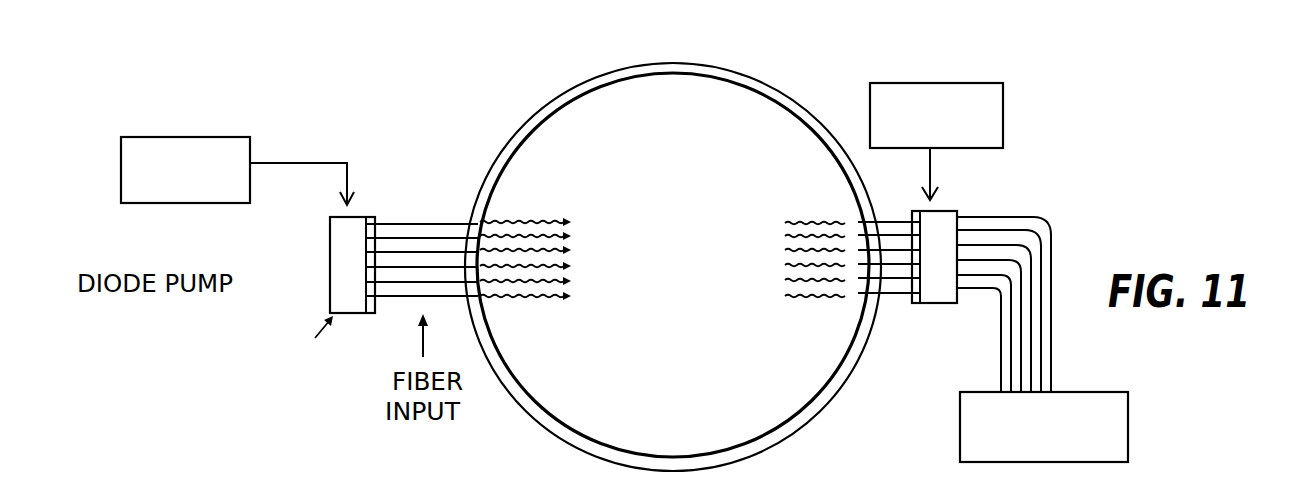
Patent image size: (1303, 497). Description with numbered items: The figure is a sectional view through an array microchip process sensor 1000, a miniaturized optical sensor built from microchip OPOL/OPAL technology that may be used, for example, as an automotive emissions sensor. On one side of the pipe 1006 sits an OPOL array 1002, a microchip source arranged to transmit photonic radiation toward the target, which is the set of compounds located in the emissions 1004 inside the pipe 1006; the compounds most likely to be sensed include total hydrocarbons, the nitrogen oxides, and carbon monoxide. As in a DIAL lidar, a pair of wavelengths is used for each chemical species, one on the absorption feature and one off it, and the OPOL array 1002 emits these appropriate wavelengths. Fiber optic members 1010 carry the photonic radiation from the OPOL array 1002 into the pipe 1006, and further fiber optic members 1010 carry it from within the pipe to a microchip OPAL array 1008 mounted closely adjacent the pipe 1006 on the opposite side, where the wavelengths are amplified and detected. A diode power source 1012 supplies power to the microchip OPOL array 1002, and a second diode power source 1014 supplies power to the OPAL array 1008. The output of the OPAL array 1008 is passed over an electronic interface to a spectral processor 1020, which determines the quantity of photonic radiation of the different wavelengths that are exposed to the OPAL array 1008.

The array microchip process sensor 1000 is at (1055, 152).
The OPOL array 1002 is at (330, 283).
The emissions 1004 is at (688, 213).
The pipe 1006 is at (750, 77).
The microchip OPAL array 1008 is at (957, 213).
The fiber optic members 1010 is at (422, 247).
The diode power source 1012 is at (210, 137).
The diode power source 1014 is at (950, 83).
The spectral processor 1020 is at (1128, 408).